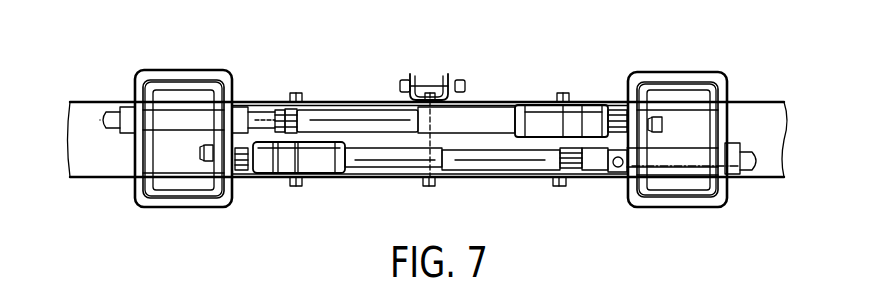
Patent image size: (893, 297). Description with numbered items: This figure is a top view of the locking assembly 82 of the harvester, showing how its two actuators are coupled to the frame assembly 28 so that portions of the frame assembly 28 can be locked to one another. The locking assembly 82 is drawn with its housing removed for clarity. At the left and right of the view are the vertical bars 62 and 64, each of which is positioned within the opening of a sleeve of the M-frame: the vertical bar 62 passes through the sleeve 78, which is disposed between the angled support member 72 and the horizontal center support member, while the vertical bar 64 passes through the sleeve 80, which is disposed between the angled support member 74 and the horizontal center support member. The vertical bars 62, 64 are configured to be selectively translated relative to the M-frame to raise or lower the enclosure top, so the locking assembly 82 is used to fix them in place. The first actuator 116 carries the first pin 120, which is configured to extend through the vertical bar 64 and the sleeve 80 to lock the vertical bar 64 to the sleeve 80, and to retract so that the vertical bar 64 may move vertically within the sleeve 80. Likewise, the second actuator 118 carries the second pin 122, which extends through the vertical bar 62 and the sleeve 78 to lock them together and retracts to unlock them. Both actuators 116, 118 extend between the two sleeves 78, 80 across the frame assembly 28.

The frame assembly 28 is at (704, 36).
The vertical bar 62 is at (163, 200).
The vertical bar 64 is at (693, 202).
The angled support member 72 is at (107, 162).
The angled support member 74 is at (777, 167).
The sleeve 78 is at (142, 205).
The sleeve 80 is at (720, 203).
The locking assembly 82 is at (392, 185).
The first actuator 116 is at (307, 157).
The second actuator 118 is at (550, 122).
The first pin 120 is at (592, 163).
The second pin 122 is at (265, 117).